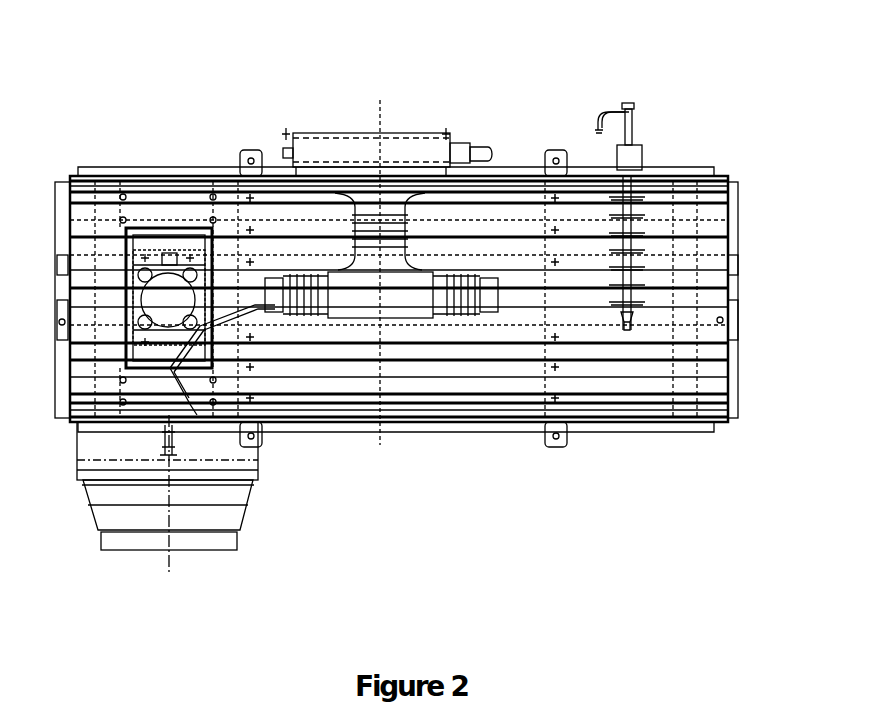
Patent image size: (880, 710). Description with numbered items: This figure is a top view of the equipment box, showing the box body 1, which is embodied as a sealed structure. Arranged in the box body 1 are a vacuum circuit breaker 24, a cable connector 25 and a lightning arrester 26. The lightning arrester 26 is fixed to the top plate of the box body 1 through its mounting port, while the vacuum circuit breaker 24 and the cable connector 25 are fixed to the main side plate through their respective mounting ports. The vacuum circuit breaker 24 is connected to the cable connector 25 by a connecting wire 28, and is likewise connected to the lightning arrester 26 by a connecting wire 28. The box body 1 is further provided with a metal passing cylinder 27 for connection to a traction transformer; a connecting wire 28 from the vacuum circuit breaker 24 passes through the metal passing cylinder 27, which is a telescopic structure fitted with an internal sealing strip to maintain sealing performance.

The box body 1 is at (740, 205).
The vacuum circuit breaker 24 is at (318, 152).
The cable connector 25 is at (637, 148).
The lightning arrester 26 is at (167, 297).
The metal passing cylinder 27 is at (137, 515).
The connecting wire 28 is at (182, 355).